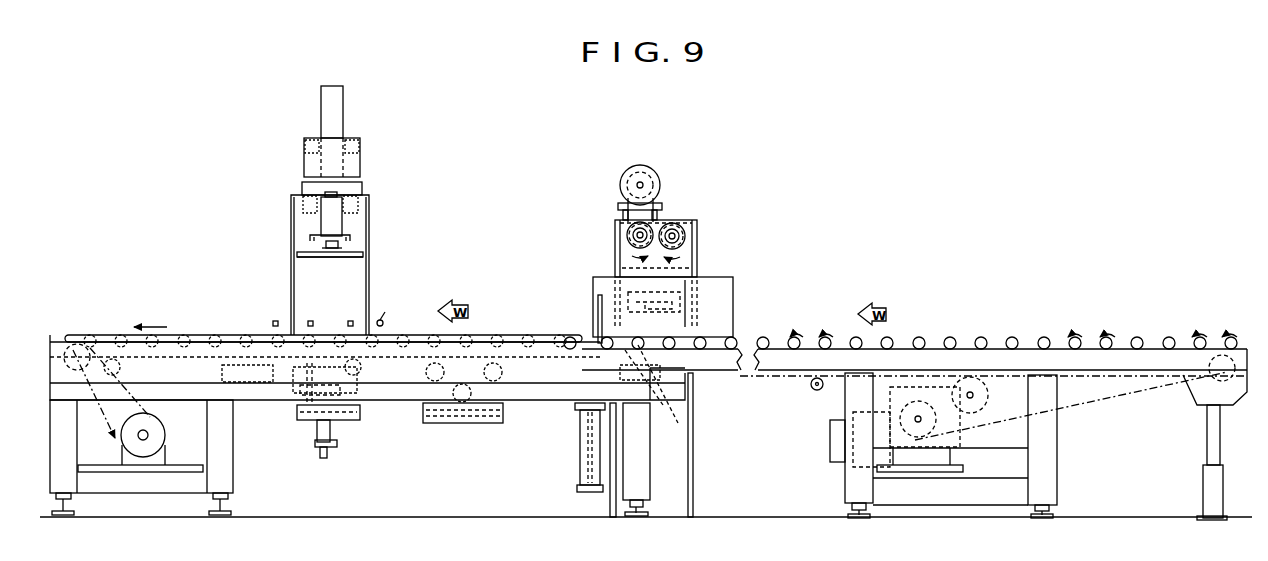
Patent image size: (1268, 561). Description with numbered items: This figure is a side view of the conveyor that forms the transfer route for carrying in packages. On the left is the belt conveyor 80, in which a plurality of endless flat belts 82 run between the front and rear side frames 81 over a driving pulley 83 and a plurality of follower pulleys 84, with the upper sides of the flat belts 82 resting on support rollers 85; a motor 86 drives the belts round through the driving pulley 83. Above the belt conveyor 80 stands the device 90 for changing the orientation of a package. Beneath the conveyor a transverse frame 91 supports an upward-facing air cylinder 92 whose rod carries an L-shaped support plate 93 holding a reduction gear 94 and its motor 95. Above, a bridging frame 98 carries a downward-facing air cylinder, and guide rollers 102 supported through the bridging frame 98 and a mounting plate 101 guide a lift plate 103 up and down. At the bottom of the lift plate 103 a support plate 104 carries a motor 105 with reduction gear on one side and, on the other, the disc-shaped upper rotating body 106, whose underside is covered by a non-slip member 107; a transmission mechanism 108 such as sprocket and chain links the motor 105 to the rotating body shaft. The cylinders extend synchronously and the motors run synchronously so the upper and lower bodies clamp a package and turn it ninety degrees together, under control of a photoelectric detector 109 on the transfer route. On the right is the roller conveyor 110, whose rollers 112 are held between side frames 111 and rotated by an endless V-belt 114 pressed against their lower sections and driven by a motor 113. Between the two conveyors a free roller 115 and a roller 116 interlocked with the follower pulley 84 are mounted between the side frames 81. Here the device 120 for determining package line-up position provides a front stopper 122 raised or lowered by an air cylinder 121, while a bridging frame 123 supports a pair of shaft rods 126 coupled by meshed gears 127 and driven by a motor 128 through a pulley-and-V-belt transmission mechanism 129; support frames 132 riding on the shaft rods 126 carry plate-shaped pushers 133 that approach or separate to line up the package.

The belt conveyor 80 is at (148, 316).
The side frames 81 is at (418, 407).
The flat belts 82 is at (108, 335).
The driving pulley 83 is at (63, 338).
The follower pulleys 84 is at (247, 338).
The support rollers 85 is at (202, 338).
The motor 86 is at (165, 447).
The device for changing the orientation of a package 90 is at (410, 136).
The transverse frame 91 is at (350, 423).
The air cylinder 92 is at (317, 430).
The support plate 93 is at (307, 370).
The reduction gear 94 is at (370, 385).
The motor 95 is at (393, 370).
The bridging frame 98 is at (302, 190).
The mounting plate 101 is at (305, 157).
The guide rollers 102 is at (310, 140).
The lift plate 103 is at (333, 86).
The support plate 104 is at (310, 237).
The motor with reduction gear 105 is at (340, 218).
The upper rotating body 106 is at (342, 246).
The non-slip member 107 is at (355, 256).
The transmission mechanism 108 is at (300, 254).
The photoelectric detector 109 is at (388, 307).
The roller conveyor 110 is at (998, 275).
The side frames 111 is at (784, 367).
The rollers 112 is at (793, 342).
The motor 113 is at (897, 460).
The V-belt 114 is at (1123, 400).
The free roller 115 is at (683, 390).
The roller 116 is at (656, 395).
The device for determining package line-up position 120 is at (745, 145).
The air cylinder 121 is at (580, 462).
The front stopper 122 is at (598, 312).
The bridging frame 123 is at (688, 220).
The shaft rods 126 is at (633, 242).
The meshed gears 127 is at (627, 235).
The motor 128 is at (639, 165).
The transmission mechanism 129 is at (623, 211).
The support frames 132 is at (680, 267).
The pushers 133 is at (723, 293).